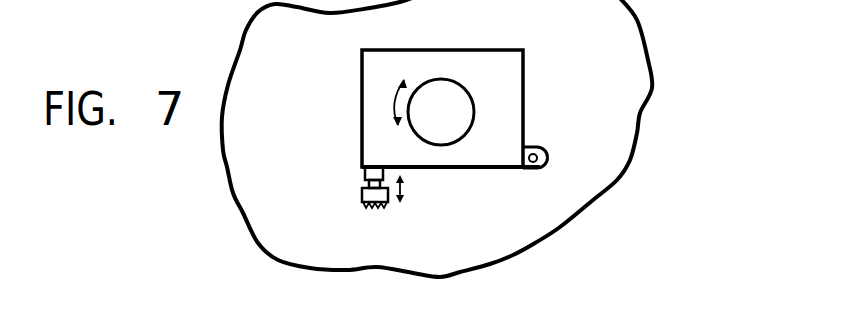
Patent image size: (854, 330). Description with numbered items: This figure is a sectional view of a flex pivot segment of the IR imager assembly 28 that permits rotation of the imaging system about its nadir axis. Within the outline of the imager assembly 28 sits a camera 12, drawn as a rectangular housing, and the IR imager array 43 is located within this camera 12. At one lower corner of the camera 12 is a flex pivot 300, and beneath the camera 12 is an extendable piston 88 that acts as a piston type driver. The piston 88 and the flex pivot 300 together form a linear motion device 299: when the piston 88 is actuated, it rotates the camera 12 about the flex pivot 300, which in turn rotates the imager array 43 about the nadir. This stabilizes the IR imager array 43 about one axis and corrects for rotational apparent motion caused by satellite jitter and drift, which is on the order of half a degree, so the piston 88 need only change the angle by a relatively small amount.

The camera 12 is at (524, 90).
The IR imager assembly 28 is at (653, 88).
The IR imager array 43 is at (479, 78).
The piston 88 is at (365, 176).
The linear motion device 299 is at (327, 133).
The flex pivot 300 is at (537, 147).